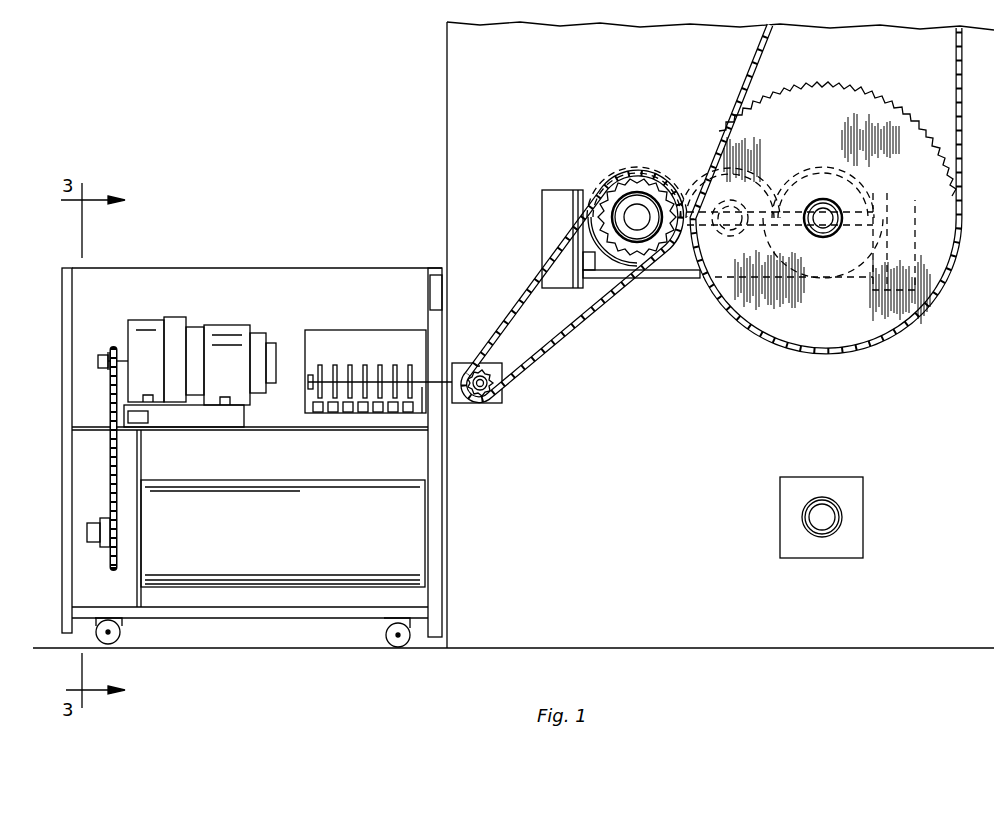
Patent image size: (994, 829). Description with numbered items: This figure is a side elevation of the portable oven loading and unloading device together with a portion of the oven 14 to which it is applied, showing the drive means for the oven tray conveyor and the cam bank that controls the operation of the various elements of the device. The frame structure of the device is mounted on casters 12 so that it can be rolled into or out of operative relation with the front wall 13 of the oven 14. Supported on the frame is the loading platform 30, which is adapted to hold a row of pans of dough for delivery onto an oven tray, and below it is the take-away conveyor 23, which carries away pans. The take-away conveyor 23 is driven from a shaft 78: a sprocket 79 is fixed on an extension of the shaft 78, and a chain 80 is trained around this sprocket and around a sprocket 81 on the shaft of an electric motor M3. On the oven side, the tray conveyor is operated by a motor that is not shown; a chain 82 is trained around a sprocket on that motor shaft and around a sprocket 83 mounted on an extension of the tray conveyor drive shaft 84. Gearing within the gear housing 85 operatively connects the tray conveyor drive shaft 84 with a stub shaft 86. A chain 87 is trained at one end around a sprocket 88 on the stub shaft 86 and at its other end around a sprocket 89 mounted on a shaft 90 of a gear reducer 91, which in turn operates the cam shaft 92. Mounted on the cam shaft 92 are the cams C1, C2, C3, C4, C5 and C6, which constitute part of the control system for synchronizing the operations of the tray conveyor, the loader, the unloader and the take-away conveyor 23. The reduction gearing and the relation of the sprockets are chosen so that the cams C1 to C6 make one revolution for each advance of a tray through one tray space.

The casters 12 is at (118, 642).
The front wall 13 is at (446, 150).
The oven 14 is at (831, 452).
The take-away conveyor 23 is at (301, 545).
The loading platform 30 is at (320, 268).
The shaft 78 is at (87, 532).
The sprocket 79 is at (103, 522).
The chain 80 is at (110, 462).
The sprocket 81 is at (98, 358).
The chain 82 is at (750, 72).
The sprocket 83 is at (875, 93).
The tray conveyor drive shaft 84 is at (828, 212).
The gear housing 85 is at (668, 280).
The stub shaft 86 is at (638, 208).
The chain 87 is at (525, 305).
The sprocket 88 is at (628, 272).
The sprocket 89 is at (500, 381).
The shaft 90 is at (487, 396).
The gear reducer 91 is at (455, 363).
The cam shaft 92 is at (422, 415).
The electric motor M3 is at (147, 318).
The cam C1 is at (319, 362).
The cam C2 is at (334, 364).
The cam C3 is at (350, 364).
The cam C4 is at (365, 364).
The cam C5 is at (381, 364).
The cam C6 is at (396, 364).